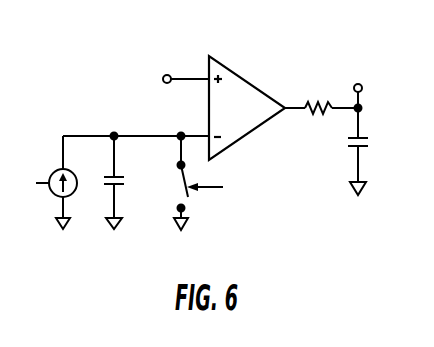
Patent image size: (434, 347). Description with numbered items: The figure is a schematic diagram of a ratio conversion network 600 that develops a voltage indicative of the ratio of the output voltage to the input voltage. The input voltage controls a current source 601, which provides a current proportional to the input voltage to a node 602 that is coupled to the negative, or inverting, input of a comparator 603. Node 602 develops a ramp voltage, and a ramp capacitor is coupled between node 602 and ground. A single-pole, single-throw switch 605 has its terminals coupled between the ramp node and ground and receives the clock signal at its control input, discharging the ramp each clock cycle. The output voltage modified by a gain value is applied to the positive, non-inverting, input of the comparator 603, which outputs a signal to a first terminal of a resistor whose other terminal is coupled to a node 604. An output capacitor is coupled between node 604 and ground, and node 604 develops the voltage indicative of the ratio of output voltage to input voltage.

The ratio conversion network 600 is at (332, 228).
The current source 601 is at (56, 171).
The node 602 is at (85, 135).
The comparator 603 is at (252, 120).
The node 604 is at (362, 100).
The single-pole, single-throw switch 605 is at (188, 197).